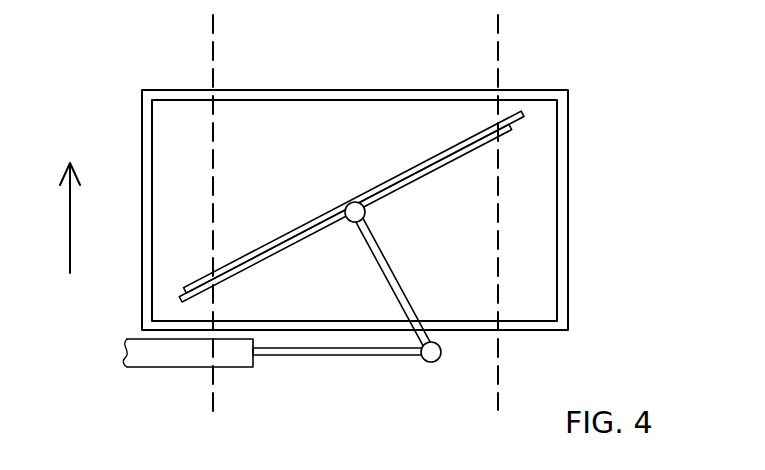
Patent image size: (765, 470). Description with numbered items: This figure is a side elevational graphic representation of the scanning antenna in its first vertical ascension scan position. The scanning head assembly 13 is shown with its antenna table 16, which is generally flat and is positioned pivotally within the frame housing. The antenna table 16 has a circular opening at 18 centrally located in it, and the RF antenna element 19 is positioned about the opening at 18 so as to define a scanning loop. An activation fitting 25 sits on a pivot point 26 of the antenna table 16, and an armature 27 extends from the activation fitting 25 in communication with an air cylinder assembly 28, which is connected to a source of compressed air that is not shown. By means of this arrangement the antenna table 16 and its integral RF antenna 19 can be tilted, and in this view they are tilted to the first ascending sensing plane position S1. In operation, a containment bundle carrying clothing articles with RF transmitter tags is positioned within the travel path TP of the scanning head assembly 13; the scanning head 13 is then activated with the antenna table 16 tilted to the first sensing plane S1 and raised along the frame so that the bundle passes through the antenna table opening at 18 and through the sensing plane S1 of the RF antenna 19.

The scanning head assembly 13 is at (569, 172).
The antenna table 16 is at (438, 168).
The circular opening 18 is at (258, 268).
The RF antenna element 19 is at (477, 133).
The activation fitting 25 is at (435, 363).
The pivot point 26 is at (348, 204).
The armature 27 is at (348, 356).
The air cylinder assembly 28 is at (170, 368).
The first sensing plane S1 is at (514, 132).
The travel path TP is at (500, 38).